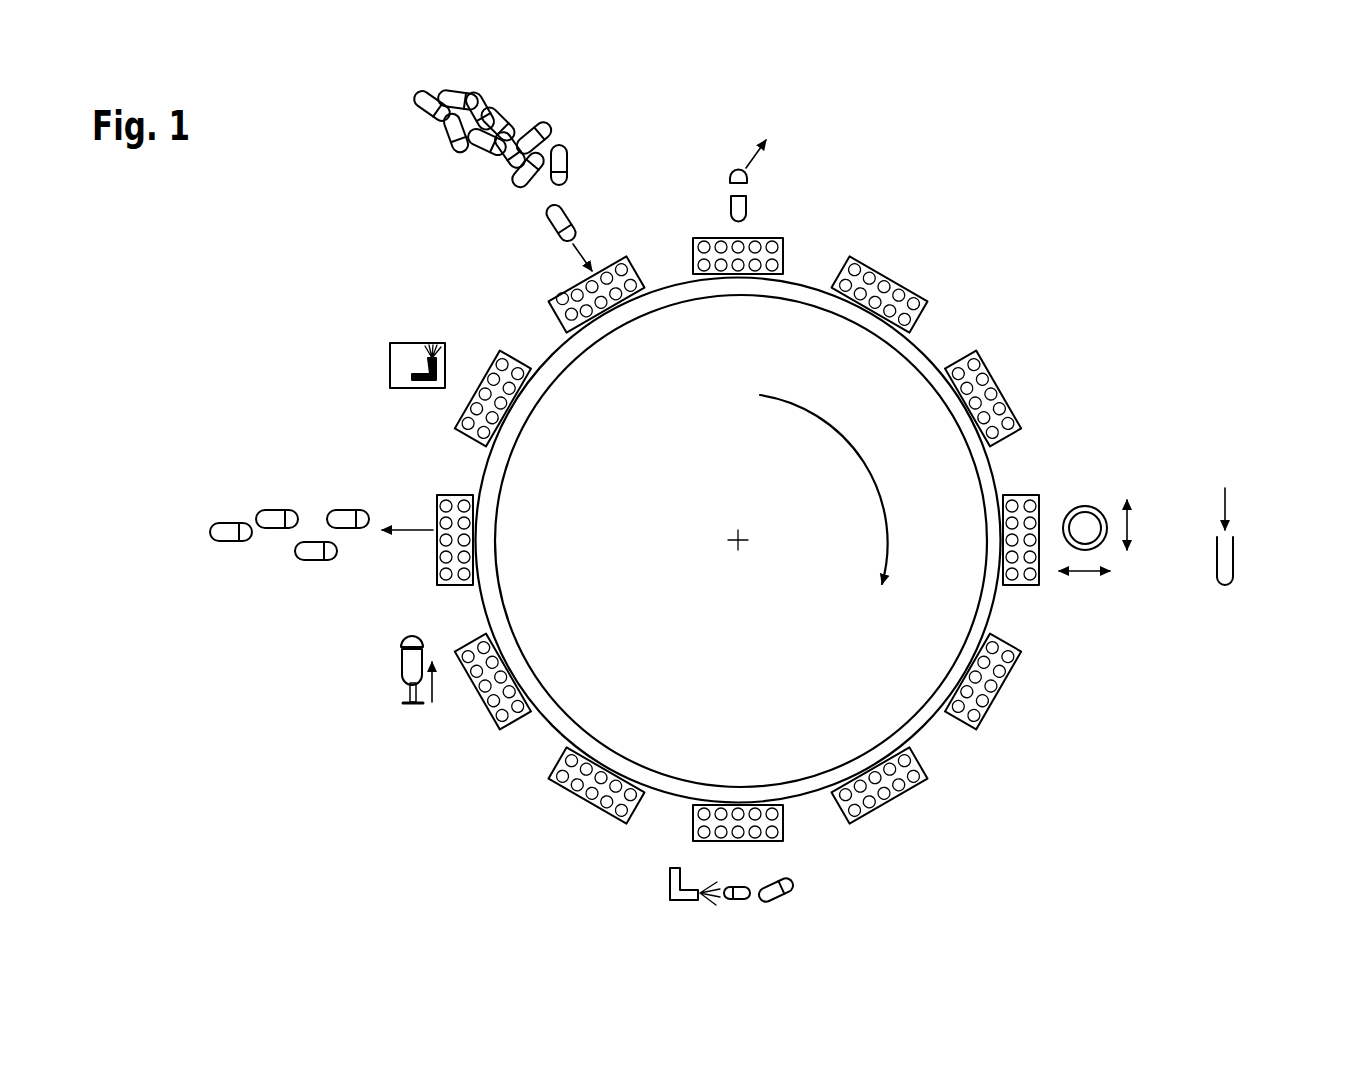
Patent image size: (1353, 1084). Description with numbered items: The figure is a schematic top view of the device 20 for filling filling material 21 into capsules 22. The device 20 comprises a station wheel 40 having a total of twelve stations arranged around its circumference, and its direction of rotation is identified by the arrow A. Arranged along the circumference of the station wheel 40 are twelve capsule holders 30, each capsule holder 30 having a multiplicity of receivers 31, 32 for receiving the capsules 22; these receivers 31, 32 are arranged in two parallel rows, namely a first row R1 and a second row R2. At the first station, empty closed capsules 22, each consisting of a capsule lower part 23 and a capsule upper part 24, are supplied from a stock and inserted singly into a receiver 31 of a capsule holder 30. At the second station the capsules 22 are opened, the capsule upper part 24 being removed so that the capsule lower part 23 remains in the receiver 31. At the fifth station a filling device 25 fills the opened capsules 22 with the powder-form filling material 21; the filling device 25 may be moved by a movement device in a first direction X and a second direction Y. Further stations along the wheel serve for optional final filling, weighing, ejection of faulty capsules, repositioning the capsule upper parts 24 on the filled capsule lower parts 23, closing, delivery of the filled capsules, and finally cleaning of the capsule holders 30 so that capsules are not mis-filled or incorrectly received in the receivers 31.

The device 20 is at (290, 305).
The filling material 21 is at (1236, 548).
The capsules 22 is at (420, 113).
The capsule lower part 23 is at (749, 210).
The capsule upper part 24 is at (750, 177).
The filling device 25 is at (1085, 508).
The capsule holder 30 is at (565, 309).
The receiver 31 is at (560, 300).
The receiver 32 is at (568, 322).
The station wheel 40 is at (920, 358).
The first row R1 is at (690, 262).
The second row R2 is at (690, 246).
The arrow A is at (866, 462).
The first direction X is at (1085, 578).
The second direction Y is at (1134, 525).